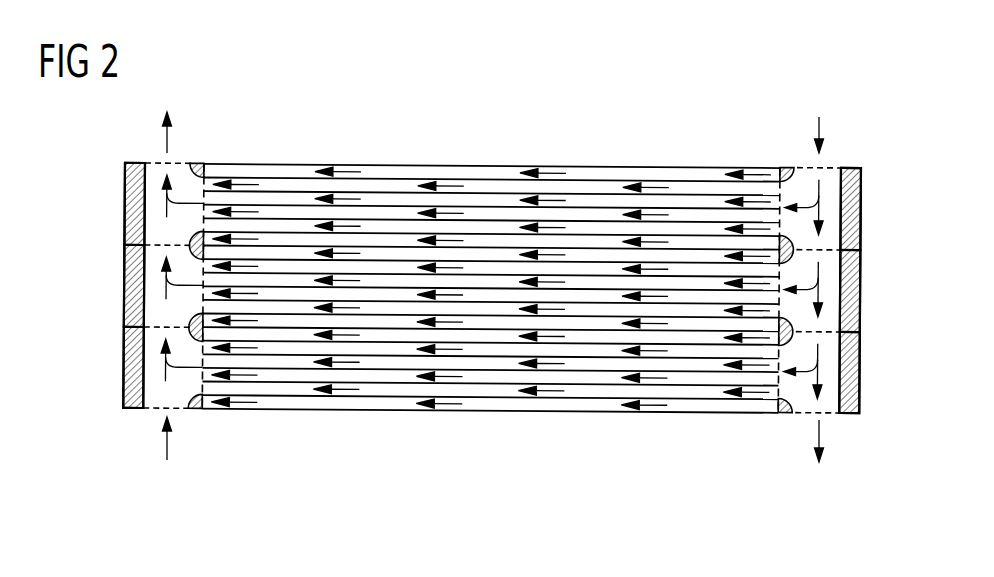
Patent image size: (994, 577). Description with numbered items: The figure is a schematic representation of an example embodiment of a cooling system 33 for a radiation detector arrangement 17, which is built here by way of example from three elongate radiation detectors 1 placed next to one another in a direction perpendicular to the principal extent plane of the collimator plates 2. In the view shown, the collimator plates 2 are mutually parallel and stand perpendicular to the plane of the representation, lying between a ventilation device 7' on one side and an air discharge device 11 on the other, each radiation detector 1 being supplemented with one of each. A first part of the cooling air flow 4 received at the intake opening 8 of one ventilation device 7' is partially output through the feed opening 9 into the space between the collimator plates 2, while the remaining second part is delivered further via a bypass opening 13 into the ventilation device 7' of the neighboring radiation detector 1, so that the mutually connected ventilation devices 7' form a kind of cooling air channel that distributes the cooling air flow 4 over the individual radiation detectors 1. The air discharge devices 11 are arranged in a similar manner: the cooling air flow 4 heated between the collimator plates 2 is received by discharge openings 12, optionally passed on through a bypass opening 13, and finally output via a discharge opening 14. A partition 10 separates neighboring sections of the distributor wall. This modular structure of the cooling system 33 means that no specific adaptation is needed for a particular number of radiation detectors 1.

The radiation detector 1 is at (400, 328).
The collimator plates 2 is at (598, 192).
The cooling air flow 4 is at (815, 122).
The ventilation device 7' is at (871, 290).
The intake opening 8 is at (838, 167).
The feed opening 9 is at (779, 188).
The partition 10 is at (832, 252).
The air discharge device 11 is at (137, 193).
The discharge openings 12 is at (203, 218).
The bypass opening 13 is at (158, 245).
The discharge opening 14 is at (165, 143).
The radiation detector arrangement 17 is at (74, 163).
The cooling system 33 is at (131, 437).